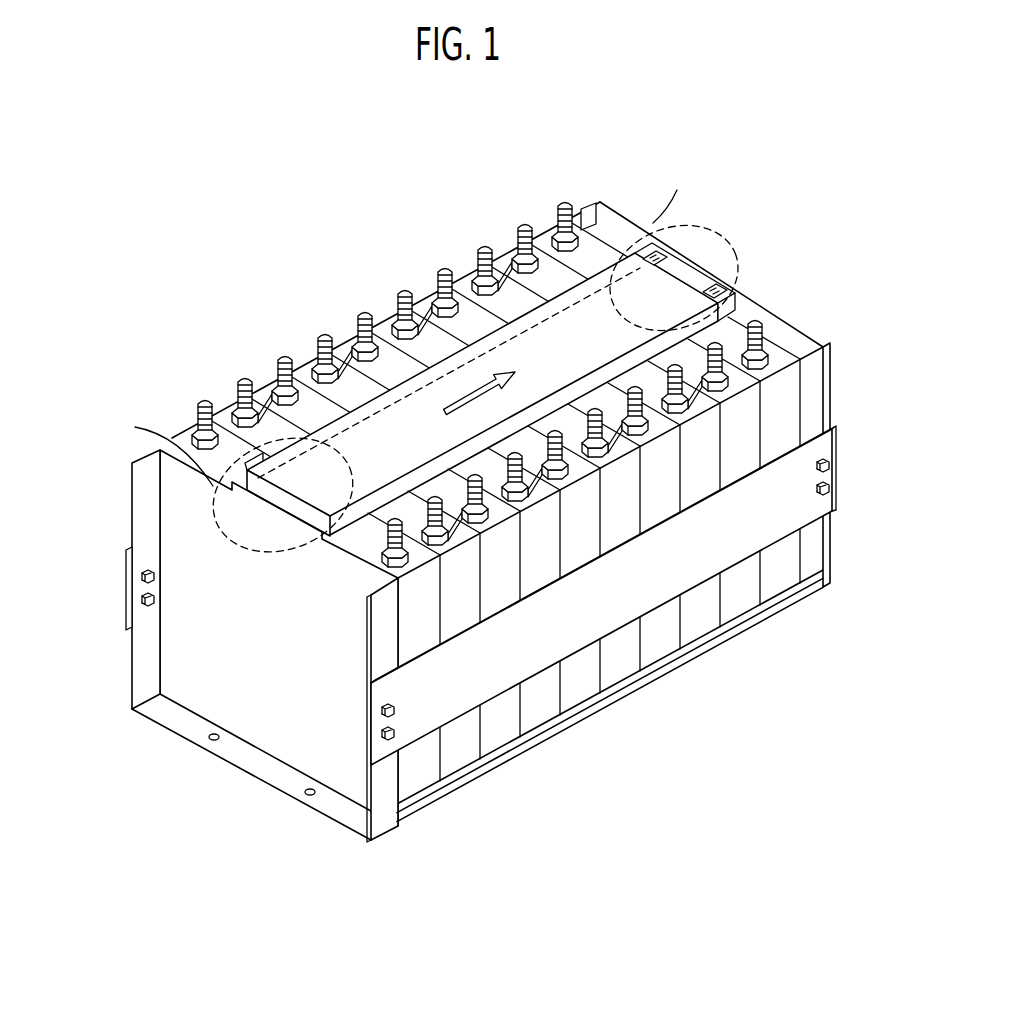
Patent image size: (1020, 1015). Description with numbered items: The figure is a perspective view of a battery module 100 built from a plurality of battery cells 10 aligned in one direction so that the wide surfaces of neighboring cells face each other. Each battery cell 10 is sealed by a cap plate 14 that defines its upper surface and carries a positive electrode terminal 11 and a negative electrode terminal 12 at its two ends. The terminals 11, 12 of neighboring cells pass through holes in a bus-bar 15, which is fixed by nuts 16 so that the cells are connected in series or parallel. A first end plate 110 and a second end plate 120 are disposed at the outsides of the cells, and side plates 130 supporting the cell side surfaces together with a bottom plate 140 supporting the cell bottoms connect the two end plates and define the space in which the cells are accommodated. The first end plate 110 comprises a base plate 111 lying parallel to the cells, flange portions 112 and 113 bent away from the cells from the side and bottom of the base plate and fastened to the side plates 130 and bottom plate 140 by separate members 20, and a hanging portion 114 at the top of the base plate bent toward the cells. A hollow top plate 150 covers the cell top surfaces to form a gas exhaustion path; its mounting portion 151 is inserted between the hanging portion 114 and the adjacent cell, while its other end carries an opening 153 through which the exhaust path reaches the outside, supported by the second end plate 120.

The battery module 100 is at (234, 215).
The battery cell 10 is at (458, 603).
The positive electrode terminal 11 is at (567, 200).
The negative electrode terminal 12 is at (757, 318).
The cap plate 14 is at (598, 252).
The bus-bar 15 is at (214, 420).
The nut 16 is at (270, 404).
The separate member 20 is at (400, 735).
The first end plate 110 is at (181, 650).
The base plate 111 is at (225, 685).
The flange portion 112 is at (150, 510).
The flange portion 113 is at (183, 722).
The hanging portion 114 is at (244, 458).
The second end plate 120 is at (783, 328).
The side plate 130 is at (133, 545).
The bottom plate 140 is at (583, 730).
The top plate 150 is at (413, 393).
The mounting portion 151 is at (323, 432).
The opening 153 is at (712, 262).